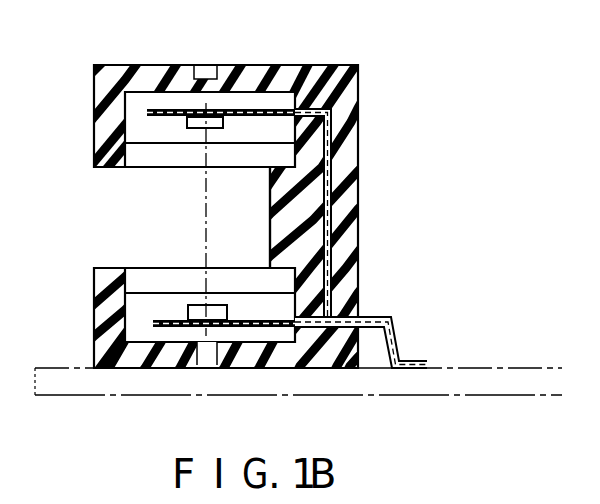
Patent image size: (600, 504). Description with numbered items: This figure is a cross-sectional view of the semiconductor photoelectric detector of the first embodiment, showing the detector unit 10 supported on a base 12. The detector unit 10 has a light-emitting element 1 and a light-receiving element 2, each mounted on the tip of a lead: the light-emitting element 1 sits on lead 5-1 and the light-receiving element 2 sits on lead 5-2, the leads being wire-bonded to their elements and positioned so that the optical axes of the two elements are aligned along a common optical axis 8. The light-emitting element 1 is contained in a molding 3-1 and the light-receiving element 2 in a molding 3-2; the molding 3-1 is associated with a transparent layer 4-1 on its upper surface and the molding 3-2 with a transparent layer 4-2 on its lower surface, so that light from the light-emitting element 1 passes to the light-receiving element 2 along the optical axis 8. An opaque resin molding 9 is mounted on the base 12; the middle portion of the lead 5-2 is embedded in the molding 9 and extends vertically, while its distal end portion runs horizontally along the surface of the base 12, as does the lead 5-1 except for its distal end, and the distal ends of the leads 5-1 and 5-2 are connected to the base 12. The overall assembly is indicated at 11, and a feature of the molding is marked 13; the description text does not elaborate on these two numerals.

The light-emitting element 1 is at (198, 305).
The light-receiving element 2 is at (212, 121).
The molding 3-1 is at (138, 309).
The molding 3-2 is at (138, 135).
The transparent layer 4-1 is at (150, 268).
The transparent layer 4-2 is at (148, 168).
The lead 5-1 is at (263, 328).
The lead 5-2 is at (355, 229).
The common optical axis 8 is at (207, 232).
The opaque resin molding 9 is at (117, 66).
The detector unit 10 is at (290, 63).
The semiconductor device 11 is at (101, 214).
The base 12 is at (169, 388).
The sealing member 13 is at (205, 66).